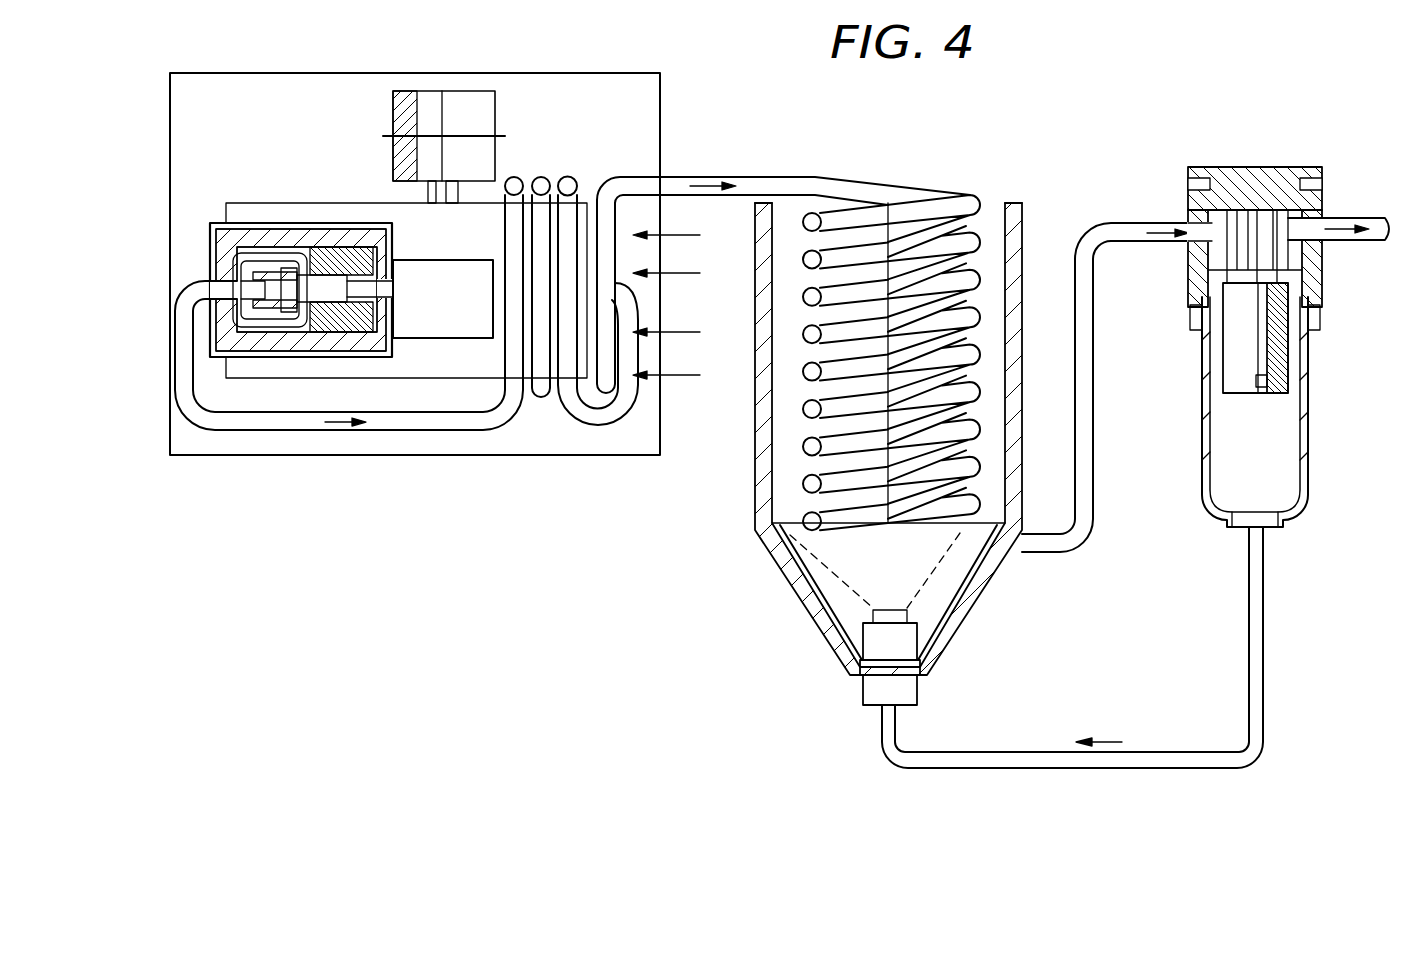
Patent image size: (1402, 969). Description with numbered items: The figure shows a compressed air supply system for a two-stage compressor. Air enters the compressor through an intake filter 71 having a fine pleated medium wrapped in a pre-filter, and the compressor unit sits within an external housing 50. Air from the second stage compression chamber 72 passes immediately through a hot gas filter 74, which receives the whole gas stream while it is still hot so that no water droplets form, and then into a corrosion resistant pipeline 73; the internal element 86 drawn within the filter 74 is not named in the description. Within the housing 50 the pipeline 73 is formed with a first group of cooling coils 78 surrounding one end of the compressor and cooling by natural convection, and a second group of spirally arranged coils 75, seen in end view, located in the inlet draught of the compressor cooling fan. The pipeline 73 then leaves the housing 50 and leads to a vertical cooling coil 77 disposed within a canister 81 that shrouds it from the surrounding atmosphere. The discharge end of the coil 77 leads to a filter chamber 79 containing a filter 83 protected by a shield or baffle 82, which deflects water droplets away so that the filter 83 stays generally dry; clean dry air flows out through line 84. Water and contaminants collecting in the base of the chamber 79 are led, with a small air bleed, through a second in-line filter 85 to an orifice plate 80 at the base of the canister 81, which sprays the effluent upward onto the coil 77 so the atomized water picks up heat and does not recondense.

The external housing 50 is at (208, 455).
The intake filter 71 is at (463, 115).
The second stage compression chamber 72 is at (462, 312).
The pipeline 73 is at (428, 430).
The hot gas filter 74 is at (301, 327).
The spirally arranged coils 75 is at (615, 395).
The vertical cooling coil 77 is at (942, 200).
The first group of cooling coils 78 is at (547, 175).
The filter chamber 79 is at (1272, 167).
The orifice plate 80 is at (922, 688).
The canister 81 is at (790, 573).
The protective shield or baffle 82 is at (1230, 345).
The filter 83 is at (1263, 388).
The line 84 is at (1362, 222).
The second in-line filter 85 is at (1275, 483).
The pump diaphragm 86 is at (243, 262).